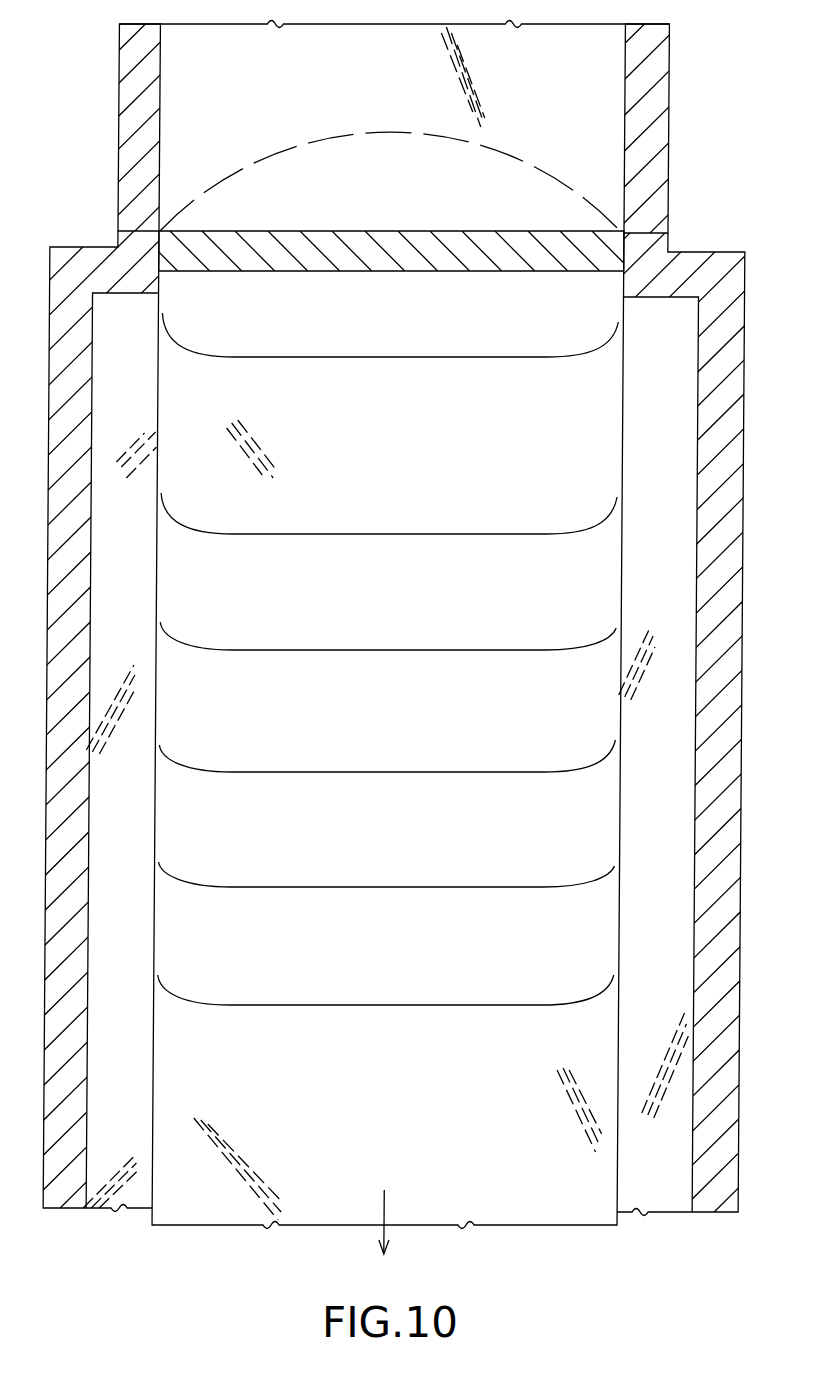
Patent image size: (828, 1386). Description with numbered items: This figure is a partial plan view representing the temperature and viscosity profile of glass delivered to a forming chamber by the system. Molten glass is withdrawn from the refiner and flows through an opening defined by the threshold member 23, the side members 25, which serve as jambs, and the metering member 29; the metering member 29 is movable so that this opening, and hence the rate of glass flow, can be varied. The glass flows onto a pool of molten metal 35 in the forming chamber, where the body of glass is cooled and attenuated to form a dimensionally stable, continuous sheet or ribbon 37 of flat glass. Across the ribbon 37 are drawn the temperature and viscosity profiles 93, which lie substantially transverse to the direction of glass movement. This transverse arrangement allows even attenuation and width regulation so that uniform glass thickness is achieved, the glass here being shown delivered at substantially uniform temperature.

The threshold member 23 is at (385, 43).
The side members 25 is at (653, 207).
The metering member 29 is at (410, 268).
The pool of molten metal 35 is at (143, 572).
The sheet or ribbon of flat glass 37 is at (417, 467).
The temperature and viscosity profiles 93 is at (527, 772).